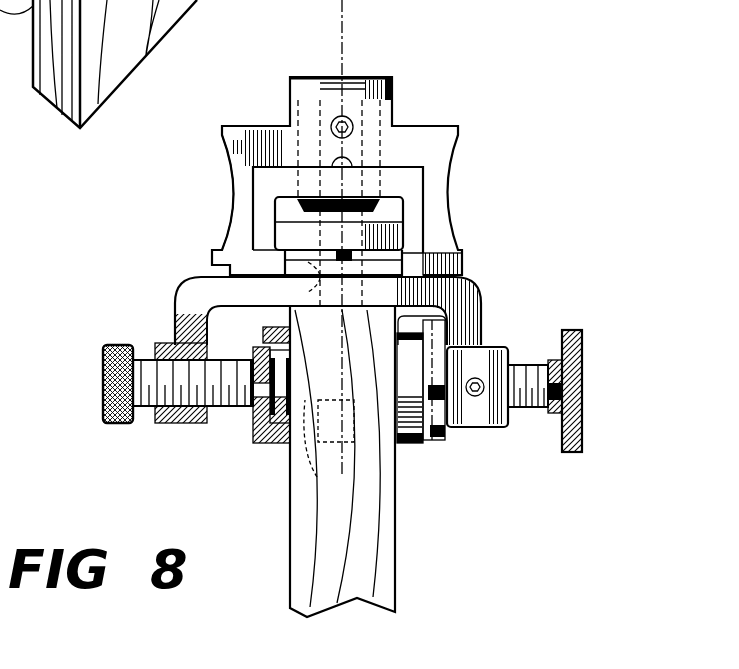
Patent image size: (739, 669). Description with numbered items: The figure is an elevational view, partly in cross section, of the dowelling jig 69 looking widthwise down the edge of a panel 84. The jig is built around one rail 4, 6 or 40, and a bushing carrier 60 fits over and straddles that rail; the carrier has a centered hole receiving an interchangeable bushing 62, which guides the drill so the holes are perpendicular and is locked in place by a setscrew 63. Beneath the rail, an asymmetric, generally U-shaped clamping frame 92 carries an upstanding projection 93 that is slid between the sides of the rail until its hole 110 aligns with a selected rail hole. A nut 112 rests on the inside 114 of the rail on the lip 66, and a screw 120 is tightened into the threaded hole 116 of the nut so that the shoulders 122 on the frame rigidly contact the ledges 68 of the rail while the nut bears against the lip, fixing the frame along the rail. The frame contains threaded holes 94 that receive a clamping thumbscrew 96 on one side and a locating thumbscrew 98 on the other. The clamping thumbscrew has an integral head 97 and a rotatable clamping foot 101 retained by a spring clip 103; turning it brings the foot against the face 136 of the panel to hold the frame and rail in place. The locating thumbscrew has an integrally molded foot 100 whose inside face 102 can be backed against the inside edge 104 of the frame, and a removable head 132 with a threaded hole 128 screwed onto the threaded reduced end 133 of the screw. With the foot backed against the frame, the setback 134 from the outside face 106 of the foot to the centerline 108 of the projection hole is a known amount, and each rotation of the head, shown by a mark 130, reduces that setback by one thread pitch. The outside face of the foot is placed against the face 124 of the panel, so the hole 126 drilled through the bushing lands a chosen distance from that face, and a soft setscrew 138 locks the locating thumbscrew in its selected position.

The rail 4 is at (190, 192).
The rail 6 is at (190, 192).
The rail 40 is at (245, 233).
The bushing carrier 60 is at (458, 128).
The bushing 62 is at (392, 88).
The setscrew 63 is at (348, 120).
The lip 66 is at (275, 250).
The ledges 68 is at (440, 272).
The dowelling jig 69 is at (341, 325).
The panel 84 is at (390, 530).
The clamping frame 92 is at (178, 298).
The projection 93 is at (393, 270).
The threaded holes 94 is at (203, 418).
The clamping thumbscrew 96 is at (243, 405).
The head 97 is at (103, 375).
The locating thumbscrew 98 is at (533, 363).
The foot 100 is at (455, 337).
The clamping foot 101 is at (262, 440).
The inside face 102 is at (413, 447).
The spring clip 103 is at (292, 437).
The inside edge 104 is at (440, 433).
The outside face 106 is at (400, 473).
The centerline 108 is at (342, 36).
The hole 110 is at (305, 283).
The nut 112 is at (398, 230).
The inside 114 is at (393, 207).
The threaded hole 116 is at (338, 232).
The screw 120 is at (292, 304).
The shoulders 122 is at (173, 330).
The face 124 is at (217, 0).
The hole 126 is at (317, 477).
The threaded hole 128 is at (580, 396).
The mark 130 is at (560, 368).
The removable head 132 is at (573, 330).
The threaded reduced end 133 is at (563, 380).
The setback 134 is at (395, 408).
The face 136 is at (287, 567).
The setscrew 138 is at (495, 423).